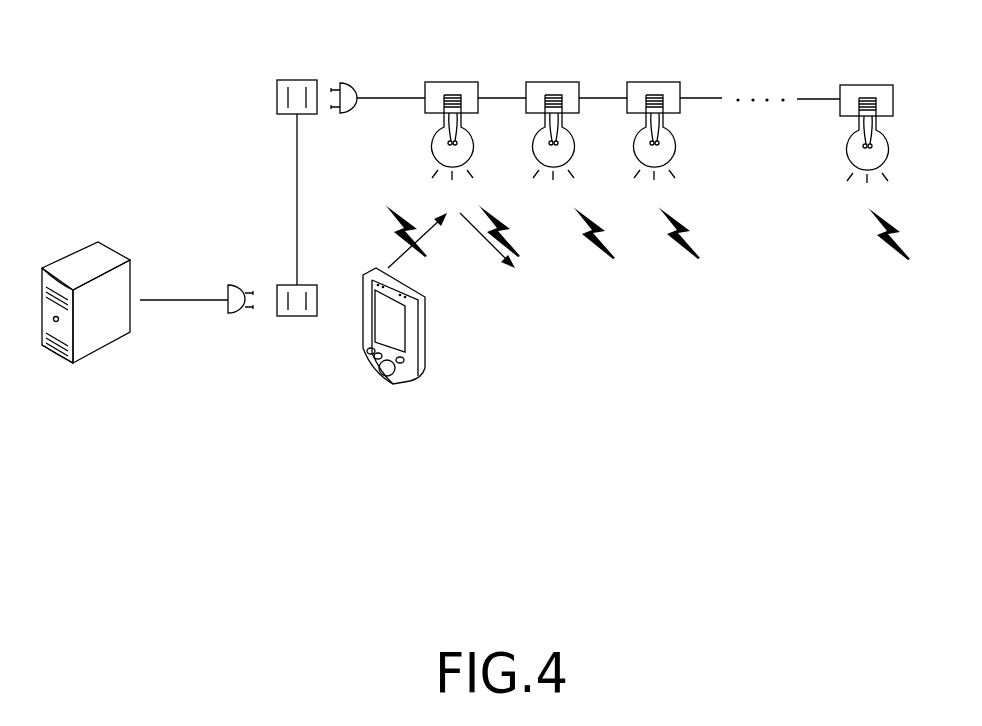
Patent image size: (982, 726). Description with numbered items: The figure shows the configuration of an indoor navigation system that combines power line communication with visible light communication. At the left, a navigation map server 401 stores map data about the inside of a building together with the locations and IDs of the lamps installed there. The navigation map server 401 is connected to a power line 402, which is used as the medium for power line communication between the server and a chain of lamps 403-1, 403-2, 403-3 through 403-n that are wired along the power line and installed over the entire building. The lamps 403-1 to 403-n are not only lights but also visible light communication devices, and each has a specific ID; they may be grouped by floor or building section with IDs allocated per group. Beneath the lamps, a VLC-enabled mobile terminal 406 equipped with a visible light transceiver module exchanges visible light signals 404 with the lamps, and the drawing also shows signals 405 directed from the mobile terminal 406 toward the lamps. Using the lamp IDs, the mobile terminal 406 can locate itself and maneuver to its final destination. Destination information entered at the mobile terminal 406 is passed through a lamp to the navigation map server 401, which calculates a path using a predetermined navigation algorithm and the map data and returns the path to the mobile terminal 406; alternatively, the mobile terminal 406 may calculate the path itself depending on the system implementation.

The navigation map server 401 is at (62, 256).
The power line 402 is at (298, 198).
The lamp 403-1 is at (450, 82).
The lamp 403-2 is at (551, 82).
The lamp 403-3 is at (652, 82).
The lamp 403-n is at (865, 85).
The visible light signals 404 is at (516, 240).
The uplink signal from terminal 405 is at (417, 240).
The mobile terminal 406 is at (427, 335).